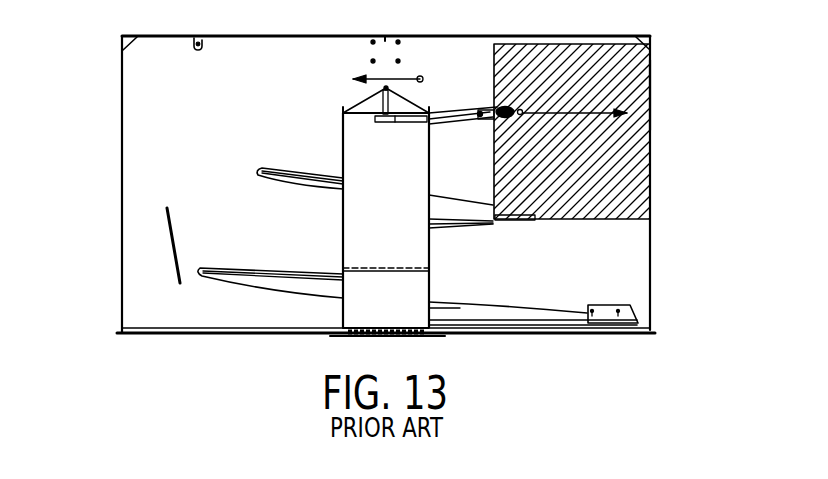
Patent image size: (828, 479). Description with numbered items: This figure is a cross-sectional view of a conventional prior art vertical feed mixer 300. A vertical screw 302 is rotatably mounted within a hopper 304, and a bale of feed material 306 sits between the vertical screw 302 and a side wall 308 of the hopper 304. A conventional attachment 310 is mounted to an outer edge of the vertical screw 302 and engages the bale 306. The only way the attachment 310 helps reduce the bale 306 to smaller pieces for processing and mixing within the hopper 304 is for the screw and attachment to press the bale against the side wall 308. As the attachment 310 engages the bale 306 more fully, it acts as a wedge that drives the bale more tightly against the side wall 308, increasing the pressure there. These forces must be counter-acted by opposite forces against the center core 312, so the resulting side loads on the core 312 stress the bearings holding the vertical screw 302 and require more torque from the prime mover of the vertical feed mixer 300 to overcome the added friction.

The vertical feed mixer 300 is at (177, 133).
The vertical screw 302 is at (300, 177).
The hopper 304 is at (272, 243).
The bale of feed material 306 is at (608, 173).
The side wall 308 is at (652, 97).
The attachment 310 is at (493, 104).
The center core 312 is at (407, 216).